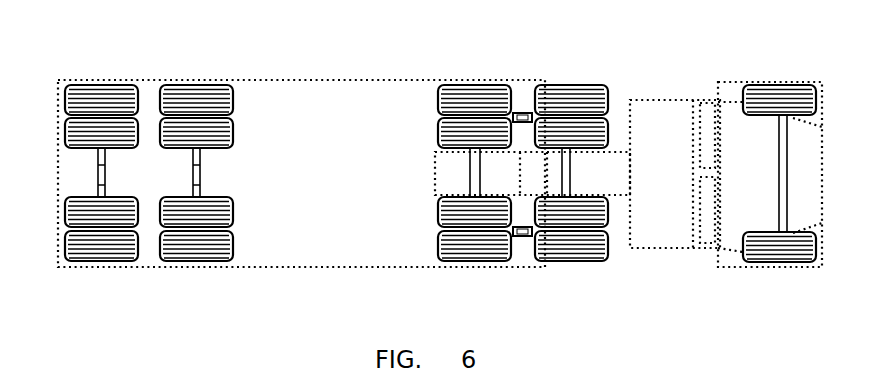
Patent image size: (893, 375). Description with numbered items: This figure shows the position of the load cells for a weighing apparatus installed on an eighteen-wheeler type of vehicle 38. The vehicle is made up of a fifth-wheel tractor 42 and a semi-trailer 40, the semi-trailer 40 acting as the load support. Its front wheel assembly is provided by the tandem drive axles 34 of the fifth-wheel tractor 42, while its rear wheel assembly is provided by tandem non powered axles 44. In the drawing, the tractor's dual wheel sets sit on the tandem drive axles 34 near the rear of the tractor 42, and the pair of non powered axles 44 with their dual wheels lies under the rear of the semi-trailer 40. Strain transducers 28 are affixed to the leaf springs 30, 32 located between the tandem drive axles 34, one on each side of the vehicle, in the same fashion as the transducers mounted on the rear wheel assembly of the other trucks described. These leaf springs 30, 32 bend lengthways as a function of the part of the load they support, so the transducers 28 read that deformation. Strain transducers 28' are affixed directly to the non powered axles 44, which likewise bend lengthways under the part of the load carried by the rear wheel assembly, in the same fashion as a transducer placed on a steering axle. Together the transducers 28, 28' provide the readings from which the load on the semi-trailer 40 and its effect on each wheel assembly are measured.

The strain transducer 28 is at (523, 178).
The strain transducer 28' is at (149, 173).
The leaf spring 30 is at (527, 110).
The leaf spring 32 is at (526, 240).
The tandem drive axles 34 is at (562, 177).
The eighteen-wheeler type of vehicle 38 is at (552, 68).
The semi-trailer 40 is at (295, 92).
The fifth-wheel tractor 42 is at (677, 115).
The tandem non powered axles 44 is at (193, 190).